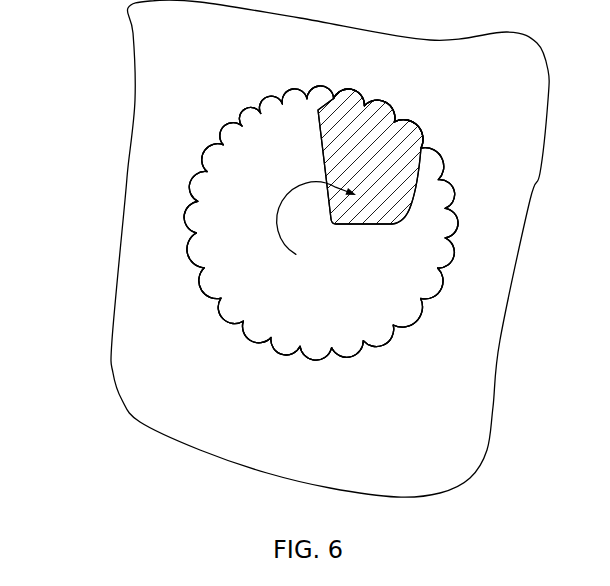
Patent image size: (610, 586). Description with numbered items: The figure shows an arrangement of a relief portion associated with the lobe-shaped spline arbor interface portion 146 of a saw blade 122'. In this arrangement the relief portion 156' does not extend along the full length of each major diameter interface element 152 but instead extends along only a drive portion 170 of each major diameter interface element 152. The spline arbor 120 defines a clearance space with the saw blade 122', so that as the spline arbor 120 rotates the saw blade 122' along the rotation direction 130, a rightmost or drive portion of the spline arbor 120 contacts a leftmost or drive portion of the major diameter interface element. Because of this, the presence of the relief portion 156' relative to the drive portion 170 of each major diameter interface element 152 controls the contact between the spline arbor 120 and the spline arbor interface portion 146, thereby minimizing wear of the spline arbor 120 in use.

The saw blade 122' is at (293, 248).
The relief portion 156' is at (320, 210).
The major diameter interface element 152 is at (466, 170).
The drive portion 170 is at (325, 360).
The spline arbor interface portion 146 is at (441, 130).
The spline arbor 120 is at (379, 226).
The rotation direction 130 is at (289, 193).